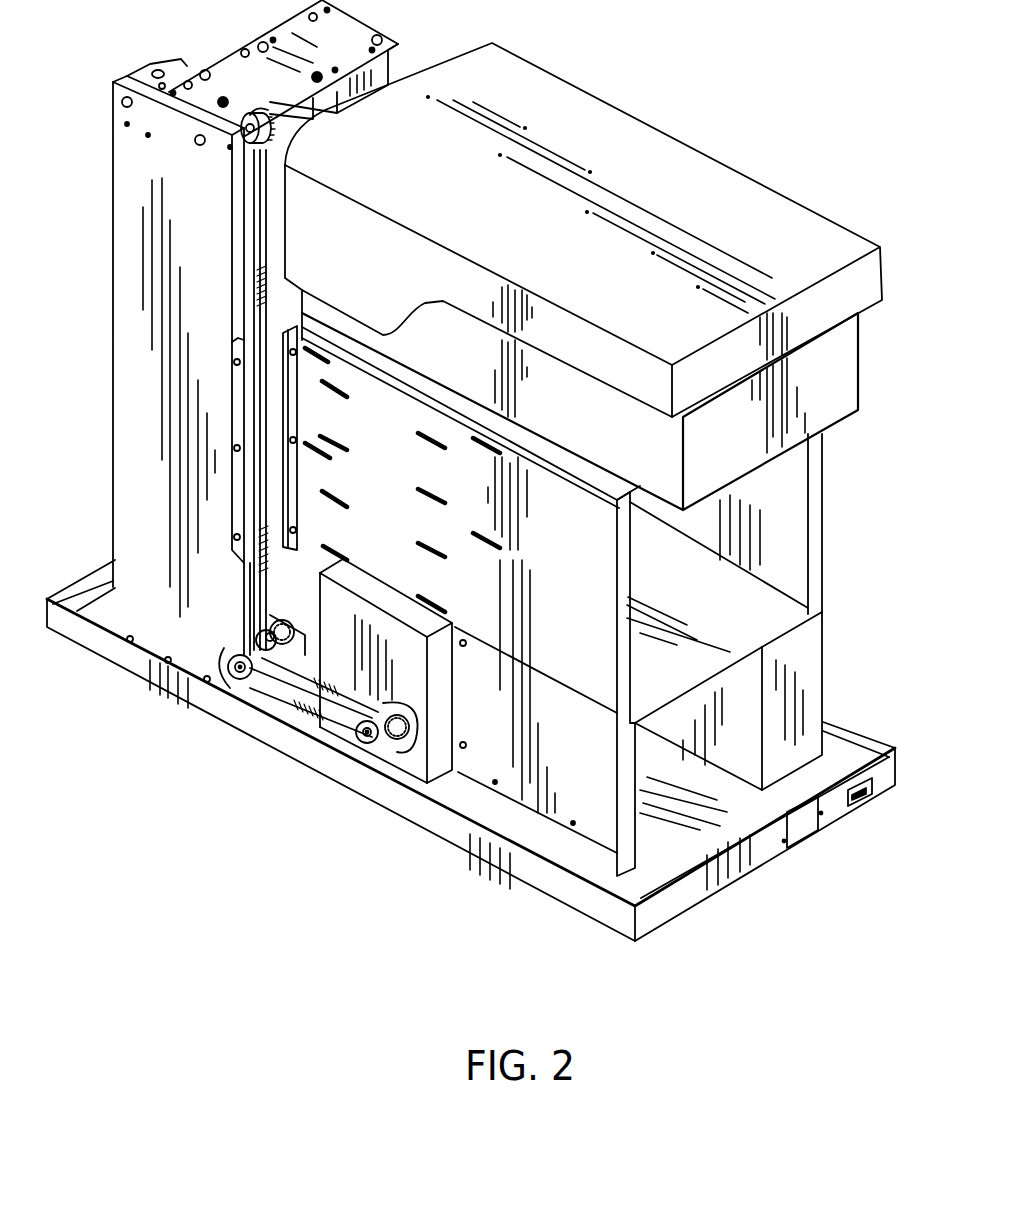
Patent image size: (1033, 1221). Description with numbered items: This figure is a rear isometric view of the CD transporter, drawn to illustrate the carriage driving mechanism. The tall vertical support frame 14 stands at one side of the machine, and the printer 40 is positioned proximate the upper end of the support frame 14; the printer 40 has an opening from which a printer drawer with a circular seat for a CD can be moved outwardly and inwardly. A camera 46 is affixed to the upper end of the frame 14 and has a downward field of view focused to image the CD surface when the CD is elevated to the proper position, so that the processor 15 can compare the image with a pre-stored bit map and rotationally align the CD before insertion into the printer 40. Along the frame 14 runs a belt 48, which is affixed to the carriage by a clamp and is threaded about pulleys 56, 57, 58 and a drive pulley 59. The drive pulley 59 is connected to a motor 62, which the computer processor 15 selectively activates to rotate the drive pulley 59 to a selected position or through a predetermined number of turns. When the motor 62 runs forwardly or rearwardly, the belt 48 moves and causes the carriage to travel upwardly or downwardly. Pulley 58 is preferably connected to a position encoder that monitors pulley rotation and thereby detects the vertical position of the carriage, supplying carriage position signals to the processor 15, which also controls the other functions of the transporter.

The vertical support frame 14 is at (113, 197).
The computer processor 15 is at (637, 114).
The printer 40 is at (469, 357).
The camera 46 is at (393, 64).
The belt 48 is at (257, 271).
The pulley 56 is at (262, 118).
The pulley 57 is at (283, 622).
The pulley 58 is at (258, 682).
The drive pulley 59 is at (368, 737).
The motor 62 is at (410, 745).